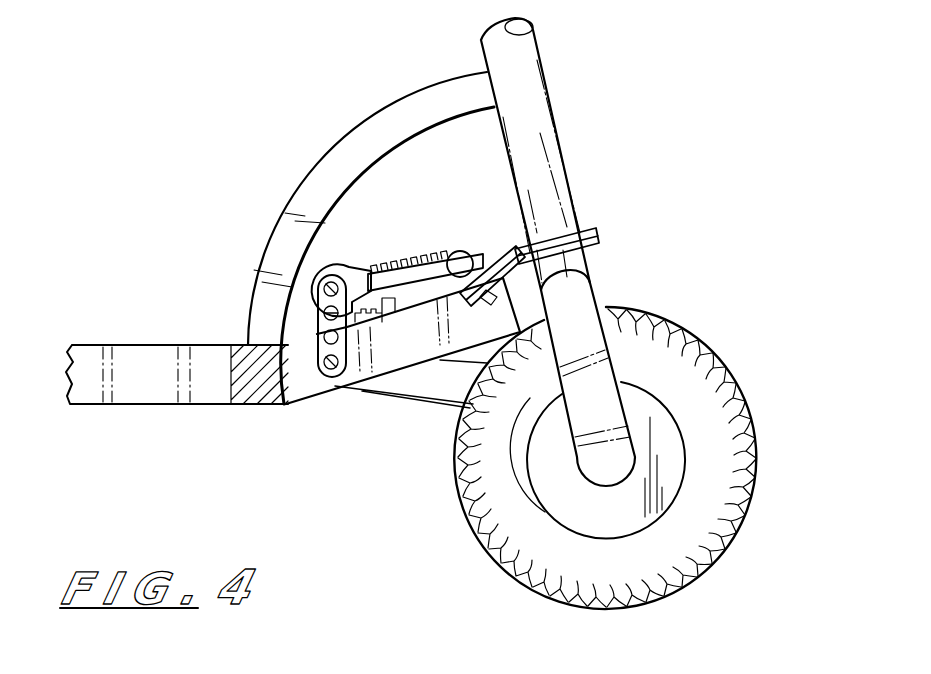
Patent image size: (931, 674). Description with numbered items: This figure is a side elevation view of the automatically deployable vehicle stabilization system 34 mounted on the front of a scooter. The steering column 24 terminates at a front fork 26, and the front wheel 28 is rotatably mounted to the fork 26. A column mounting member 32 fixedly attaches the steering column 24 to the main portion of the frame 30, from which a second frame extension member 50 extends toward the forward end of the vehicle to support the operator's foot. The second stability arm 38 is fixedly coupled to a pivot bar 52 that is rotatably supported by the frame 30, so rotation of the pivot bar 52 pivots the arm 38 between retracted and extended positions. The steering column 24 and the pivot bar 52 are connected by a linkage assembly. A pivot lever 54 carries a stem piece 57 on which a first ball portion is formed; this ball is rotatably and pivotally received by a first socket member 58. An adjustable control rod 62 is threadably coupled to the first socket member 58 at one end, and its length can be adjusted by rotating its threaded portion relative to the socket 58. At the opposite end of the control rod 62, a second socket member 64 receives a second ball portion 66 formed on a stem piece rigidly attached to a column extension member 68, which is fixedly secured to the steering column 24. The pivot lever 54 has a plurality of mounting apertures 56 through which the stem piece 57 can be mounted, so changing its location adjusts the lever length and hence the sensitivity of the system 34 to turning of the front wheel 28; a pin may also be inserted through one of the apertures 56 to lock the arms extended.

The steering column 24 is at (523, 110).
The front fork 26 is at (573, 310).
The front wheel 28 is at (493, 510).
The frame 30 is at (143, 378).
The column mounting member 32 is at (350, 153).
The vehicle stabilization system 34 is at (401, 222).
The second stability arm 38 is at (417, 375).
The second frame extension member 50 is at (416, 352).
The pivot bar 52 is at (325, 378).
The pivot lever 54 is at (341, 364).
The mounting apertures 56 is at (323, 337).
The stem piece 57 is at (320, 281).
The first socket member 58 is at (294, 260).
The adjustable control rod 62 is at (422, 245).
The second socket member 64 is at (423, 265).
The second ball portion 66 is at (460, 251).
The column extension member 68 is at (500, 262).